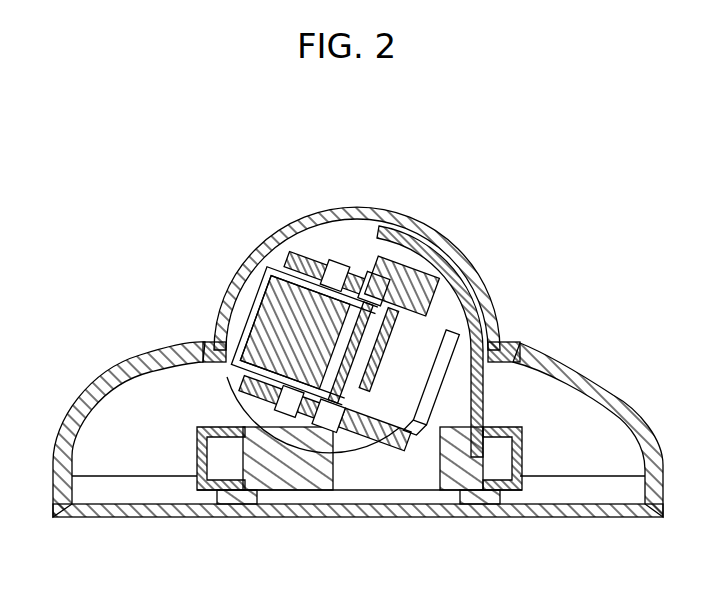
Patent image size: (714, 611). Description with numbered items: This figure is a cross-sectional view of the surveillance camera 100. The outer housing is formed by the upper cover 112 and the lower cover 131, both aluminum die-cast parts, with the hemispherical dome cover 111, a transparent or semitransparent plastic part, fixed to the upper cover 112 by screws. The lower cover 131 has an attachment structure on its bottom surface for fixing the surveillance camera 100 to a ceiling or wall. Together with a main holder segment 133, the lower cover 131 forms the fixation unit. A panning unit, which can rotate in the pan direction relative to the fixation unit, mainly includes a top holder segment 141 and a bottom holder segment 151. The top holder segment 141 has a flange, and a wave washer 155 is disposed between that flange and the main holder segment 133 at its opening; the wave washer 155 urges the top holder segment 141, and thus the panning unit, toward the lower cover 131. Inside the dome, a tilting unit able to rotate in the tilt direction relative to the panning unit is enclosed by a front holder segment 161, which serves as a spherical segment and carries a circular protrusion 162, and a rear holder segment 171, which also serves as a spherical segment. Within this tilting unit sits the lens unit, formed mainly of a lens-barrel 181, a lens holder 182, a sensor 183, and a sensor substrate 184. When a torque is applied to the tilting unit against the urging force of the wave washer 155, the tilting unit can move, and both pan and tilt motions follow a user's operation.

The surveillance camera 100 is at (120, 205).
The dome cover 111 is at (408, 228).
The upper cover 112 is at (618, 397).
The lower cover 131 is at (552, 510).
The main holder segment 133 is at (185, 490).
The top holder segment 141 is at (430, 490).
The bottom holder segment 151 is at (293, 490).
The wave washer 155 is at (478, 490).
The front holder segment 161 is at (318, 262).
The circular protrusion 162 is at (290, 260).
The rear holder segment 171 is at (447, 272).
The lens-barrel 181 is at (282, 325).
The lens holder 182 is at (345, 288).
The sensor 183 is at (407, 360).
The sensor substrate 184 is at (372, 328).